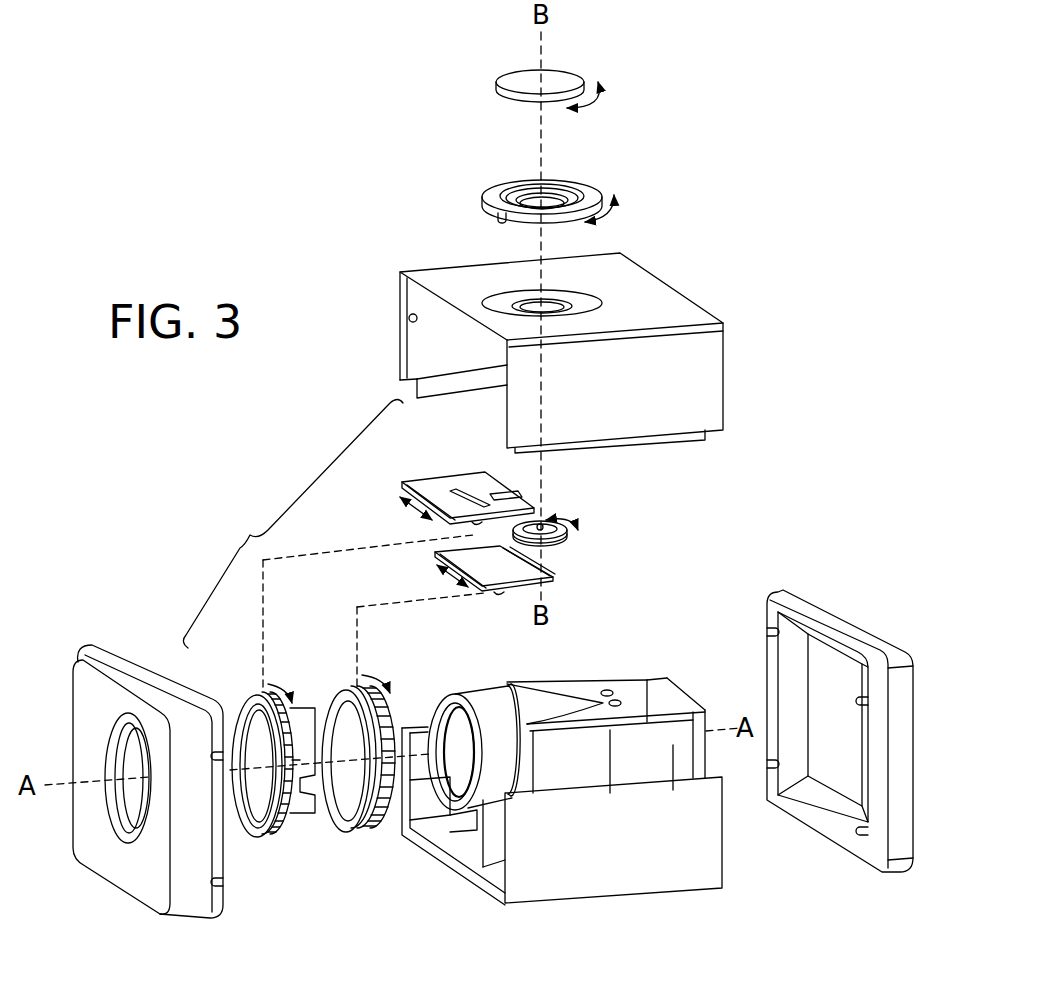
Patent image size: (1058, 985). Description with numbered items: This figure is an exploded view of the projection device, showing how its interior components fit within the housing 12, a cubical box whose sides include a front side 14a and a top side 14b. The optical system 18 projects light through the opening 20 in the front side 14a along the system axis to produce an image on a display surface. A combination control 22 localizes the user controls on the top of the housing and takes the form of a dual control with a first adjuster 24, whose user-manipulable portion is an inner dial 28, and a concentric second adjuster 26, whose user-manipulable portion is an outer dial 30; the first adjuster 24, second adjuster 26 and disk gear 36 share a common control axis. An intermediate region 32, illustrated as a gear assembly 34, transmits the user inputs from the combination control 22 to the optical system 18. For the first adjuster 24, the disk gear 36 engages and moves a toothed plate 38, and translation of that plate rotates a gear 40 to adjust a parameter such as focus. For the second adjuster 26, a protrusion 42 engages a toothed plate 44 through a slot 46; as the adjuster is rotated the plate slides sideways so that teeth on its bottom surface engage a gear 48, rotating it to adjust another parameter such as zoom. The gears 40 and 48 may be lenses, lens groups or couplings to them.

The housing 12 is at (698, 300).
The front side 14a is at (122, 711).
The top side 14b is at (640, 286).
The optical system 18 is at (636, 683).
The opening 20 is at (124, 828).
The combination control 22 is at (607, 105).
The first adjuster 24 is at (490, 90).
The second adjuster 26 is at (475, 189).
The inner dial 28 is at (580, 80).
The outer dial 30 is at (592, 186).
The intermediate region 32 is at (293, 524).
The gear assembly 34 is at (310, 682).
The disk gear 36 is at (580, 530).
The toothed plate 38 is at (560, 578).
The gear 40 is at (340, 692).
The protrusion 42 is at (497, 220).
The toothed plate 44 is at (437, 485).
The slot 46 is at (505, 496).
The gear 48 is at (236, 698).